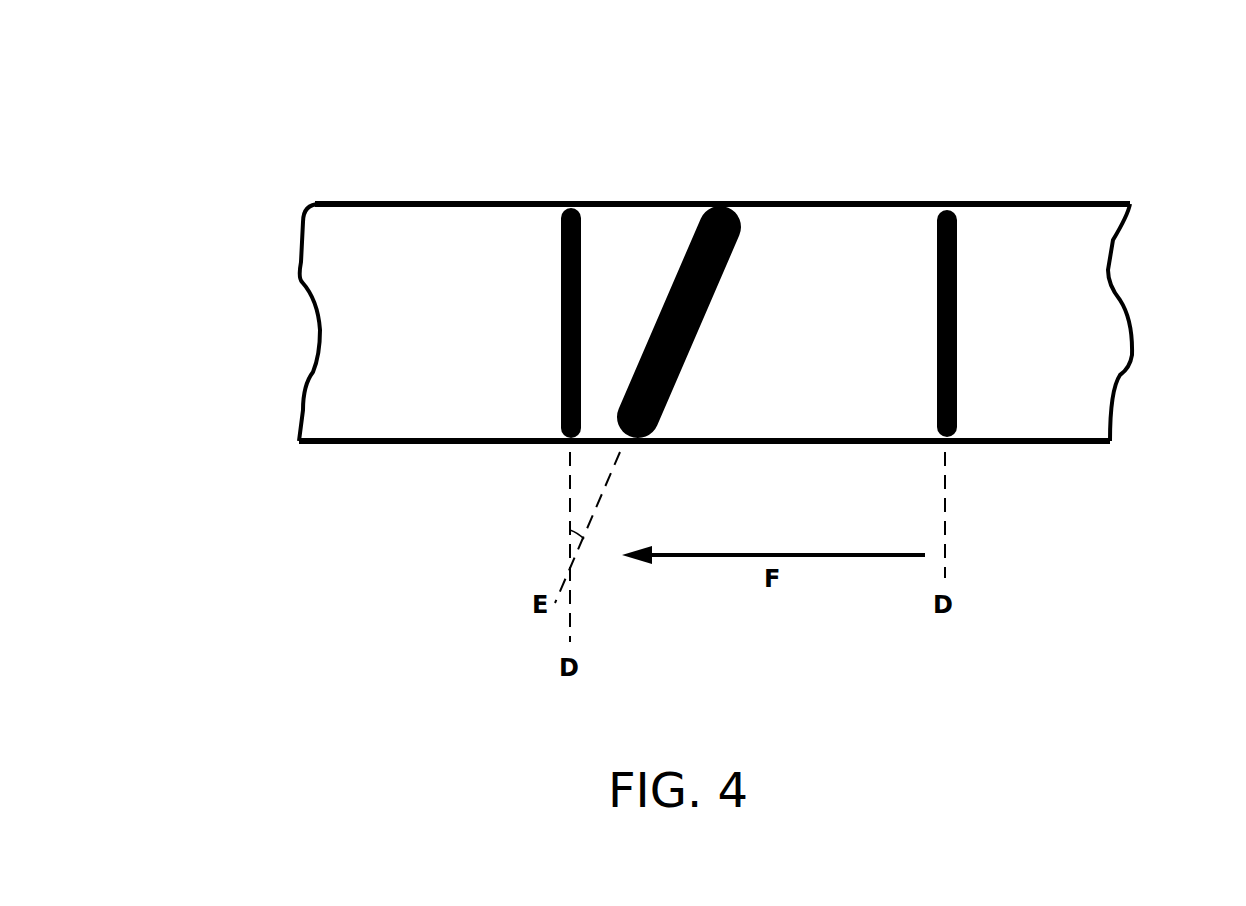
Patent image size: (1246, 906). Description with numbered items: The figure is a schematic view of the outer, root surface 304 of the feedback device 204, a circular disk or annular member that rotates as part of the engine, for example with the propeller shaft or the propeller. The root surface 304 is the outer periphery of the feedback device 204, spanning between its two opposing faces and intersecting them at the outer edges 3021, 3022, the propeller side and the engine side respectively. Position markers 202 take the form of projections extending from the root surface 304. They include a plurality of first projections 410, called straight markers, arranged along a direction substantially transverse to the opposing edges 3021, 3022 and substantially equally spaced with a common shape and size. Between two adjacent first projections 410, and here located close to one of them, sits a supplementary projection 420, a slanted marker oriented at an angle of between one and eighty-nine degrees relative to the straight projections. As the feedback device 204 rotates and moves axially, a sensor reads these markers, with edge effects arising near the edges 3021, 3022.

The position markers 202 is at (970, 87).
The feedback device 204 is at (260, 326).
The outer edge 3021 is at (352, 196).
The outer edge 3022 is at (366, 454).
The root surface 304 is at (1073, 275).
The first projections 410 is at (558, 257).
The supplementary projection 420 is at (698, 258).